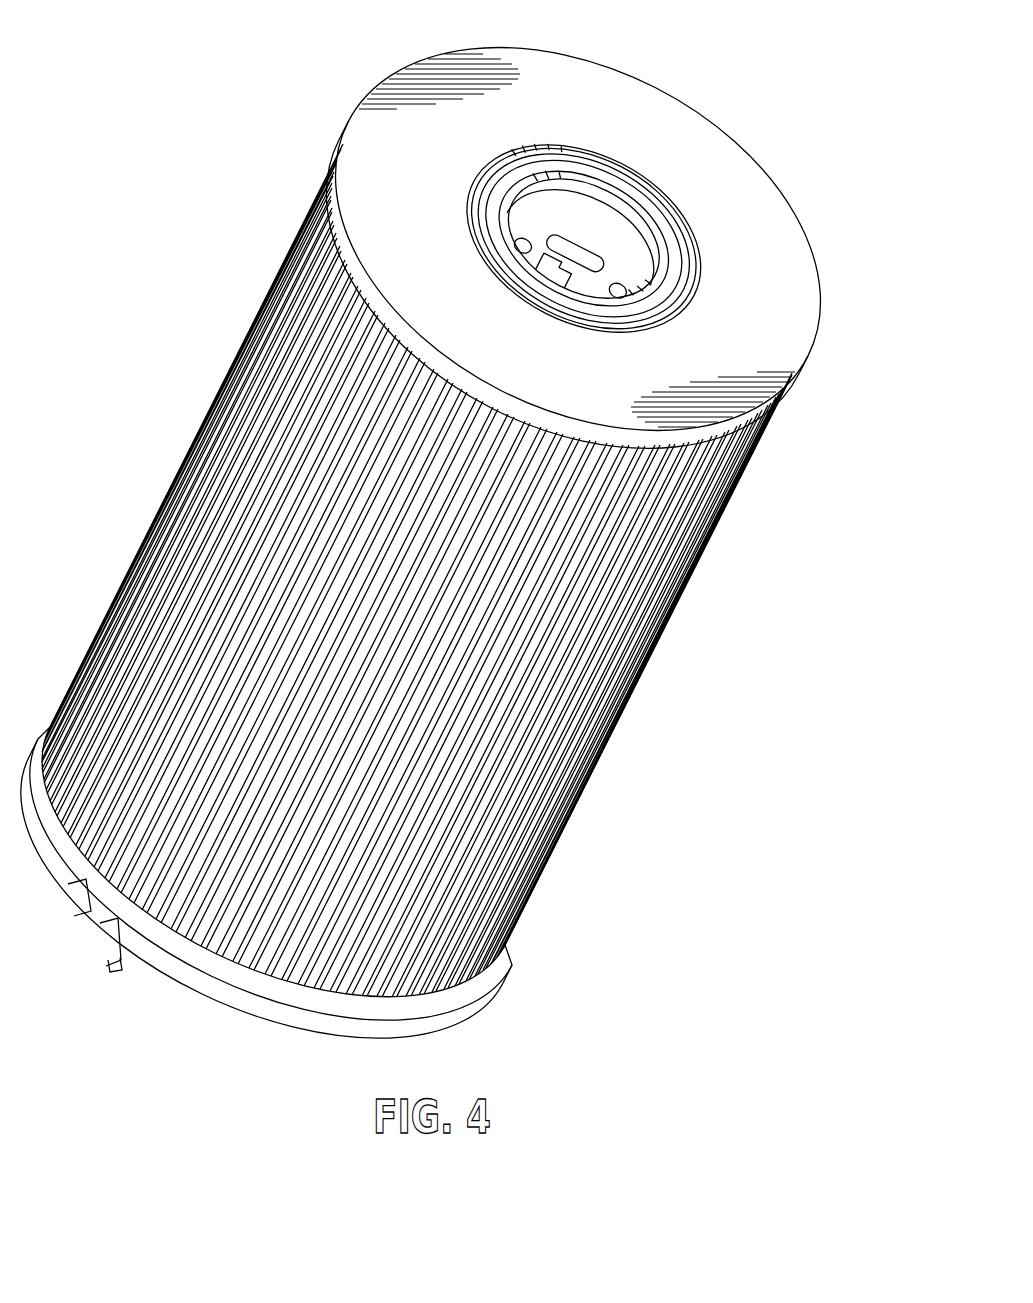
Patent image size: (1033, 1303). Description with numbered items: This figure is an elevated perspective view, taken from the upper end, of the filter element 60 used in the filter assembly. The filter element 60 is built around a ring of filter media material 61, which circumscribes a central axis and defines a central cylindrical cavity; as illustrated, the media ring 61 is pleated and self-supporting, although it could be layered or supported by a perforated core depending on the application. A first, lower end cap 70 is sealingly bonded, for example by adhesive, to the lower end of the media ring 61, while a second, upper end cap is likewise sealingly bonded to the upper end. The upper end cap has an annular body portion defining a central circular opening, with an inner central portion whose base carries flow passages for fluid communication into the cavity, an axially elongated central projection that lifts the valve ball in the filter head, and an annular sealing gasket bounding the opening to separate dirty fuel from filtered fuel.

The filter element 60 is at (692, 581).
The ring of filter media material 61 is at (597, 691).
The lower end cap 70 is at (500, 956).